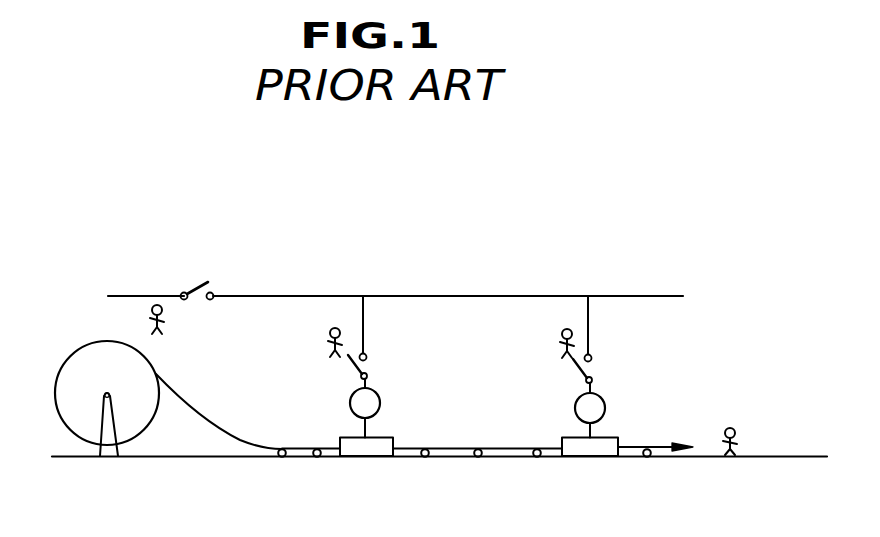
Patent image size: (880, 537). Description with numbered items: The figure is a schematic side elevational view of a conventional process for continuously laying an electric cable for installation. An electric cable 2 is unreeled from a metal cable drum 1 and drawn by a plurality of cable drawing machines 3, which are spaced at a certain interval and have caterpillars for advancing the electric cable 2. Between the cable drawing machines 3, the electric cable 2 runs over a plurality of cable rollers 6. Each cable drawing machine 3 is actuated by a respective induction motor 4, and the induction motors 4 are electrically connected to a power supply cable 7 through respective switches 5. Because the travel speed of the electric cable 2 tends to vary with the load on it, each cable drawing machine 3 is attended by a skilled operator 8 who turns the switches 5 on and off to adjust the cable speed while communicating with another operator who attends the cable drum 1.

The cable drum 1 is at (83, 353).
The electric cable 2 is at (225, 426).
The cable drawing machine 3 is at (366, 451).
The induction motor 4 is at (378, 406).
The switch 5 is at (369, 363).
The cable roller 6 is at (282, 458).
The power supply cable 7 is at (321, 296).
The skilled operator 8 is at (326, 345).